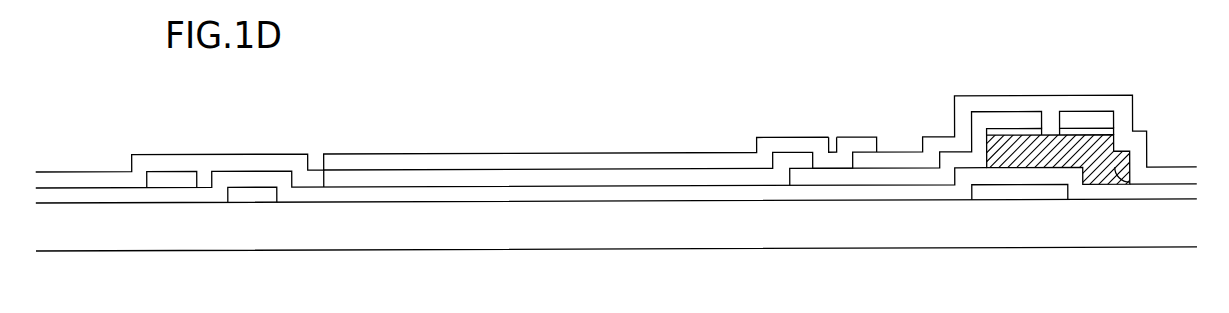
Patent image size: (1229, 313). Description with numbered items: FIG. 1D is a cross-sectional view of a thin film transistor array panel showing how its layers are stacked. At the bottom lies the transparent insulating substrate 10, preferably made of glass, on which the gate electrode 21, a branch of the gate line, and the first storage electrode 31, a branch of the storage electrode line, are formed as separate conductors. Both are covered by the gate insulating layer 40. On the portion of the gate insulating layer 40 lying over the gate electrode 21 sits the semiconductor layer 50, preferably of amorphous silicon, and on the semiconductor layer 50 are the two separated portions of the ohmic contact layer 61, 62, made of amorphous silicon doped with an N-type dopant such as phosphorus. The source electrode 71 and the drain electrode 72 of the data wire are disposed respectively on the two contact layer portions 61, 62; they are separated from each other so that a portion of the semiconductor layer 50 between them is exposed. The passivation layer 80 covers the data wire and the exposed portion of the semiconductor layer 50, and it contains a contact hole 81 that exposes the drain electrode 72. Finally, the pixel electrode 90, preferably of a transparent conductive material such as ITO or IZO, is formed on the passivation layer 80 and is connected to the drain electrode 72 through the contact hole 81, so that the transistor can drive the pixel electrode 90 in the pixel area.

The transparent insulating substrate 10 is at (647, 232).
The gate electrode 21 is at (1020, 191).
The first storage electrode 31 is at (252, 196).
The gate insulating layer 40 is at (530, 193).
The semiconductor layer 50 is at (1118, 185).
The ohmic contact layer portion 61 is at (1075, 128).
The ohmic contact layer portion 62 is at (1027, 128).
The source electrode 71 is at (1103, 118).
The drain electrode 72 is at (983, 118).
The passivation layer 80 is at (428, 177).
The contact hole 81 is at (833, 138).
The pixel electrode 90 is at (571, 163).